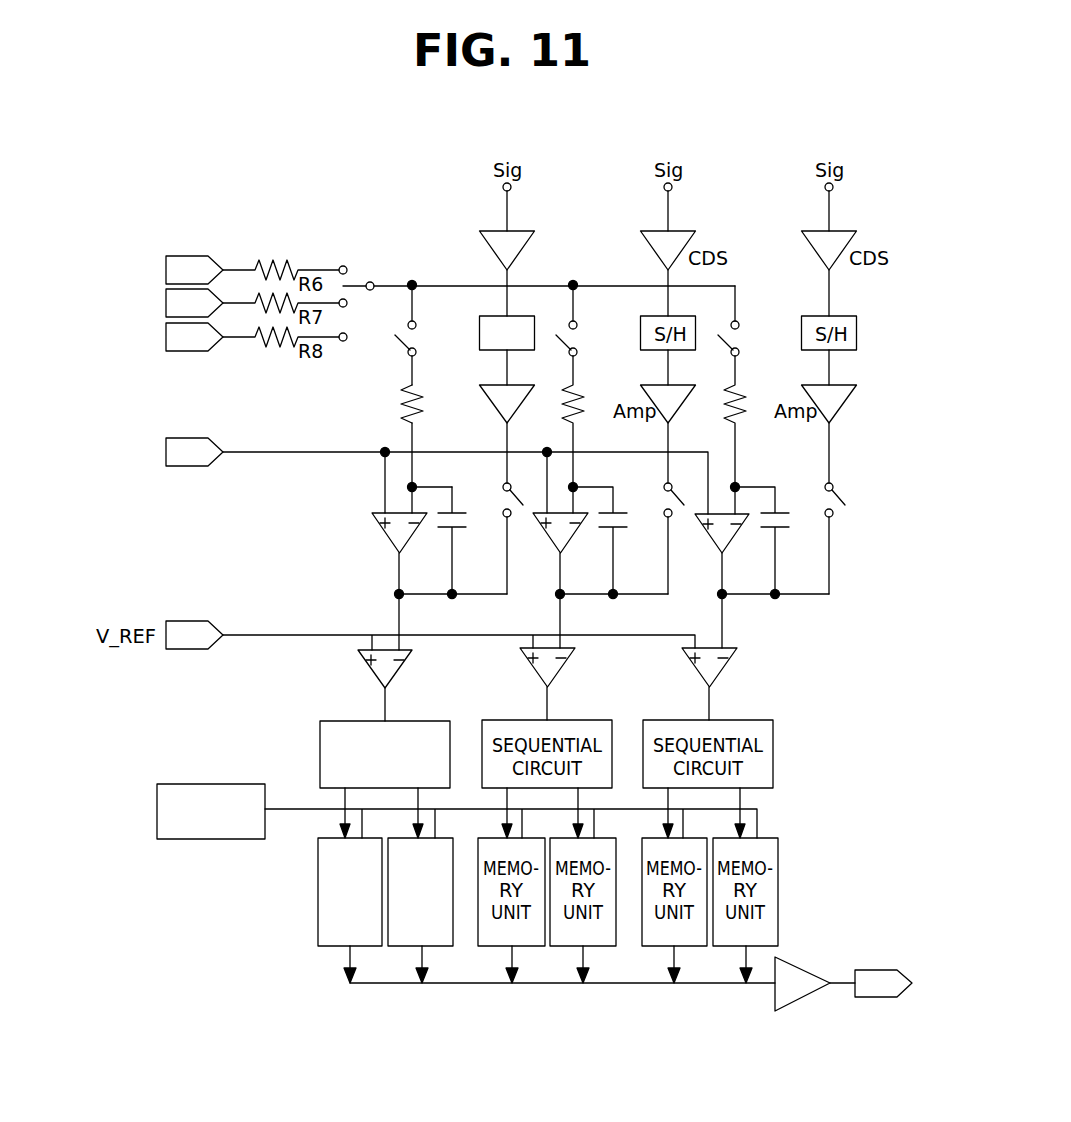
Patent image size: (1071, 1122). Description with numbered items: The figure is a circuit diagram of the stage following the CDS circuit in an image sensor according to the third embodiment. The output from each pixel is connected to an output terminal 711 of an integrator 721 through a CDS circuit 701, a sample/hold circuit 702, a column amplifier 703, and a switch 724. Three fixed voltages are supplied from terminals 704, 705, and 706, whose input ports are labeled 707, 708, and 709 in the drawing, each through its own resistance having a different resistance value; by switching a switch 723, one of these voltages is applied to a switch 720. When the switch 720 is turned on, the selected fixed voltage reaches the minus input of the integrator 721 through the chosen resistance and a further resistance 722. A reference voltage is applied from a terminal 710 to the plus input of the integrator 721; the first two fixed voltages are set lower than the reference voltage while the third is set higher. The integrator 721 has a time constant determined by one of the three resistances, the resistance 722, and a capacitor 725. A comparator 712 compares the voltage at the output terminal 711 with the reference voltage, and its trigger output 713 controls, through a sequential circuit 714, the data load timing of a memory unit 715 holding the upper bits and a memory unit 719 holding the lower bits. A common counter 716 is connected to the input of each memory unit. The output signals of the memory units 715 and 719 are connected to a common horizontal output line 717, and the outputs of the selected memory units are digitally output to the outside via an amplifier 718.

The CDS circuit 701 is at (520, 235).
The sample/hold circuit 702 is at (509, 318).
The column amplifier 703 is at (509, 388).
The terminal 704 is at (344, 266).
The terminal 705 is at (346, 306).
The terminal 706 is at (345, 341).
The input terminal V_DE6 707 is at (190, 256).
The input terminal V_DE7 708 is at (166, 307).
The input terminal V_DE8 709 is at (181, 351).
The terminal 710 is at (185, 439).
The output terminal 711 is at (397, 593).
The comparator 712 is at (405, 663).
The trigger output 713 is at (384, 703).
The sequential circuit 714 is at (320, 754).
The memory unit 715 is at (328, 948).
The common counter 716 is at (220, 784).
The common horizontal output line 717 is at (610, 983).
The amplifier 718 is at (801, 965).
The memory unit 719 is at (400, 948).
The switch 720 is at (414, 329).
The integrator 721 is at (375, 513).
The resistance 722 is at (391, 405).
The switch 723 is at (380, 287).
The switch 724 is at (500, 485).
The capacitor 725 is at (462, 530).